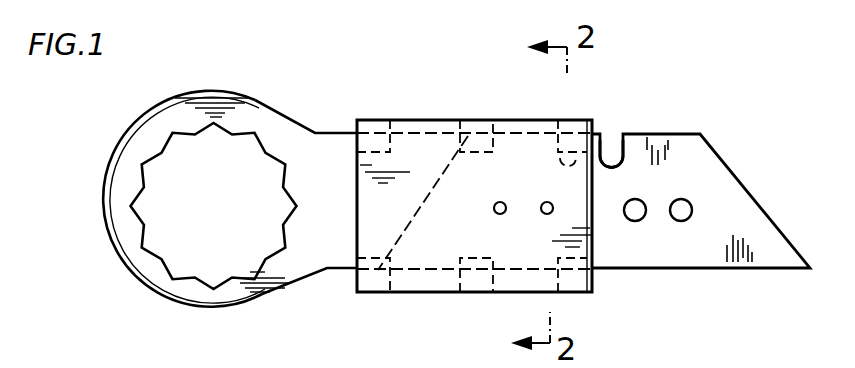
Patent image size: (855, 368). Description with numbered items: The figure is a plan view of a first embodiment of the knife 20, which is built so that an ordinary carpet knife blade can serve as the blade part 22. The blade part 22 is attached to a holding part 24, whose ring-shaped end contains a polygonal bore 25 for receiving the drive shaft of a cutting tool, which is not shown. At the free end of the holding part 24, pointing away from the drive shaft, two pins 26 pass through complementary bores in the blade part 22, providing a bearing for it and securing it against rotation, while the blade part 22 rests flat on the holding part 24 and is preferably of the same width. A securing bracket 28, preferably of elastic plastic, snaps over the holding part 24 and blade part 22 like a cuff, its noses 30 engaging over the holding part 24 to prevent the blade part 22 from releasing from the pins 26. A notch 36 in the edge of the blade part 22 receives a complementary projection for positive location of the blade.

The knife 20 is at (456, 197).
The blade part 22 is at (712, 172).
The holding part 24 is at (297, 120).
The polygonal bore 25 is at (157, 163).
The pins 26 is at (546, 196).
The securing bracket 28 is at (420, 294).
The noses 30 is at (382, 117).
The notch 36 is at (615, 142).